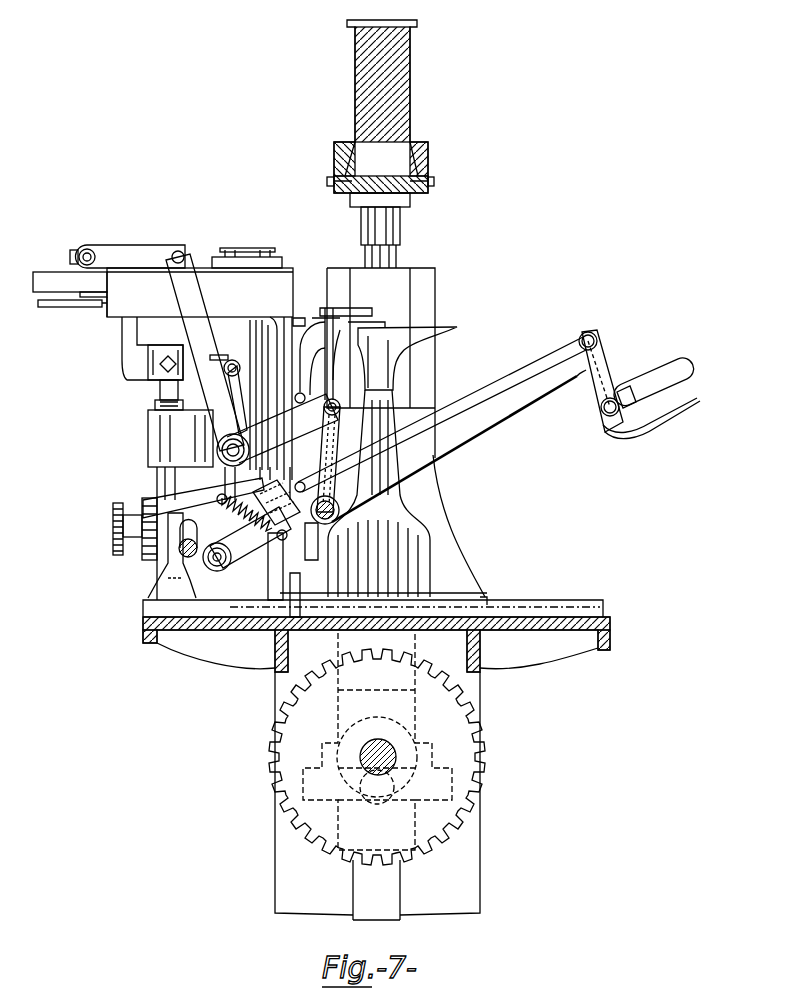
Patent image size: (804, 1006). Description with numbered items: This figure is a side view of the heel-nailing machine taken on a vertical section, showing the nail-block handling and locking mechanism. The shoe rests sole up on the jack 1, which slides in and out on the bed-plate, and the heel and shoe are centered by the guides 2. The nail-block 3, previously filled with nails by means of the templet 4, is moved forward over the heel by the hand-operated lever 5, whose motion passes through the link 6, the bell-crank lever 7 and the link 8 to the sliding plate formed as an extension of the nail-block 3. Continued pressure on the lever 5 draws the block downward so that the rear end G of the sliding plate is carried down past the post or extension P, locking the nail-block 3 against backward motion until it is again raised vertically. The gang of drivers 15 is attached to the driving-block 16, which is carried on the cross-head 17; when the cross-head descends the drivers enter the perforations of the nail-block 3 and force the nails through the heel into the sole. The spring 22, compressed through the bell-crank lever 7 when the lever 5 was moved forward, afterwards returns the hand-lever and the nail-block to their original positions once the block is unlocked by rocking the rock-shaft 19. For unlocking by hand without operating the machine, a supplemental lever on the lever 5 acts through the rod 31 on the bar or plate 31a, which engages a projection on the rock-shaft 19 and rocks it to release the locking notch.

The jack 1 is at (392, 504).
The guides 2 is at (370, 306).
The nail-block 3 is at (278, 266).
The templet 4 is at (262, 244).
The lever 5 is at (479, 428).
The link 6 is at (334, 450).
The bell-crank lever 7 is at (197, 326).
The link 8 is at (140, 252).
The drivers 15 is at (400, 222).
The driving-block 16 is at (413, 201).
The cross-head 17 is at (381, 106).
The rock-shaft 19 is at (183, 552).
The spring 22 is at (215, 425).
The link or rod 31 is at (504, 394).
The bar or plate 31a is at (185, 505).
The rear end of the sliding plate G is at (42, 275).
The post or extension P is at (122, 336).